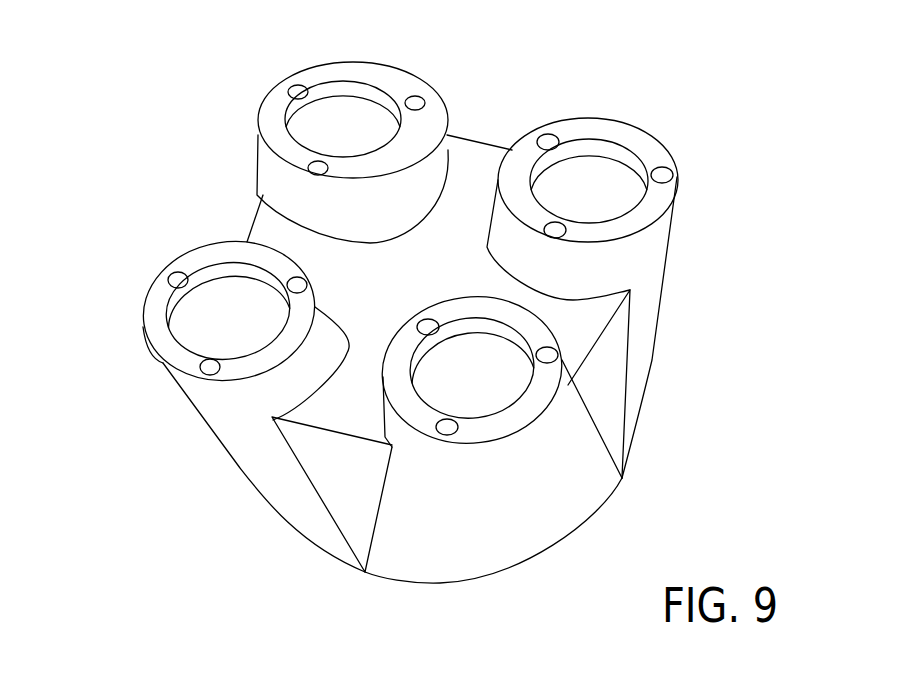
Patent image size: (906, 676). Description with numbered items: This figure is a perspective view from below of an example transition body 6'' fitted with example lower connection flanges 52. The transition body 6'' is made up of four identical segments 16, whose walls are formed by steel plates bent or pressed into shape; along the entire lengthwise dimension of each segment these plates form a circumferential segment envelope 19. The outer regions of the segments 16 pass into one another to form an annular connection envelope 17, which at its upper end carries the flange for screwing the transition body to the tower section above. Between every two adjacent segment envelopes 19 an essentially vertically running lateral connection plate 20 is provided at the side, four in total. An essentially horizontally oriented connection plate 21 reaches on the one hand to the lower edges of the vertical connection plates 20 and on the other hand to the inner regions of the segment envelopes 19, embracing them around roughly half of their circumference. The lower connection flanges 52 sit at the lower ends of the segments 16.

The transition body 6'' is at (180, 212).
The segment 16 is at (313, 133).
The annular connection envelope 17 is at (483, 577).
The segment envelope 19 is at (660, 307).
The lateral connection plate 20 is at (603, 377).
The horizontal connection plate 21 is at (472, 157).
The lower connection flange 52 is at (332, 82).